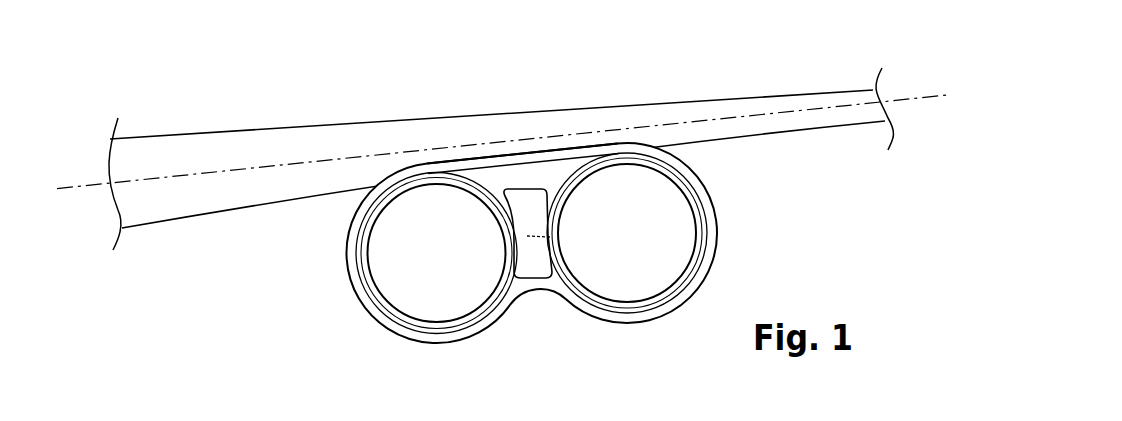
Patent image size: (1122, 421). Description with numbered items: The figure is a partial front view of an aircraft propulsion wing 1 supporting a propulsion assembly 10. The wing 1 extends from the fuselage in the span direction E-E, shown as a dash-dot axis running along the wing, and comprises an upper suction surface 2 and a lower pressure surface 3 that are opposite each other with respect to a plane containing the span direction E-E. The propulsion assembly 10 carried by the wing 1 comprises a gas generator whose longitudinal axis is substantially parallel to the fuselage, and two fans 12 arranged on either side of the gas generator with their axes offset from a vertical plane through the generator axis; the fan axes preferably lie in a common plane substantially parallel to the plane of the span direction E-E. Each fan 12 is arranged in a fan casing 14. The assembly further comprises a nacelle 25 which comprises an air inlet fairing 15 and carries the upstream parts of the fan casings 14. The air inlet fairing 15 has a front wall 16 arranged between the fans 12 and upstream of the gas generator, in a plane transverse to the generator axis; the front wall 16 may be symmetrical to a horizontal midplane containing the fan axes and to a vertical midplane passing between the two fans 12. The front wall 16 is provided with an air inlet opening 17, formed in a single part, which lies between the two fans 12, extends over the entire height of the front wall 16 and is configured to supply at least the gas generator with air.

The propulsion wing 1 is at (501, 156).
The upper suction surface 2 is at (310, 125).
The lower pressure surface 3 is at (247, 206).
The propulsion assembly 10 is at (544, 240).
The fans 12 is at (415, 267).
The fan casing 14 is at (707, 222).
The air inlet fairing 15 is at (550, 162).
The front wall 16 is at (541, 280).
The air inlet opening 17 is at (550, 237).
The nacelle 25 is at (467, 165).
The span direction EE is at (913, 100).